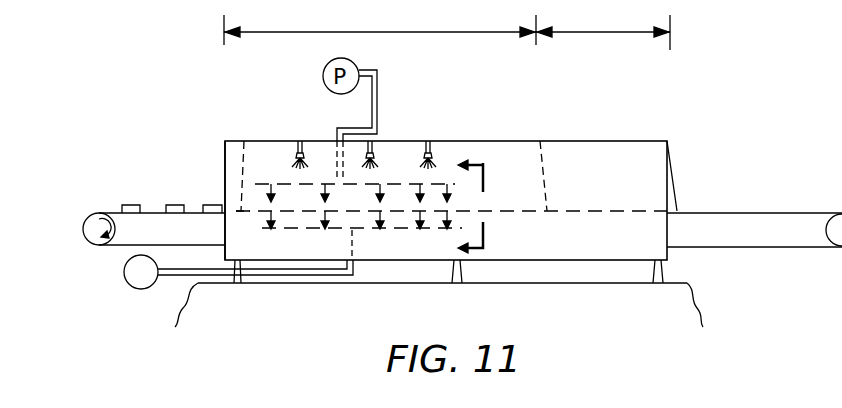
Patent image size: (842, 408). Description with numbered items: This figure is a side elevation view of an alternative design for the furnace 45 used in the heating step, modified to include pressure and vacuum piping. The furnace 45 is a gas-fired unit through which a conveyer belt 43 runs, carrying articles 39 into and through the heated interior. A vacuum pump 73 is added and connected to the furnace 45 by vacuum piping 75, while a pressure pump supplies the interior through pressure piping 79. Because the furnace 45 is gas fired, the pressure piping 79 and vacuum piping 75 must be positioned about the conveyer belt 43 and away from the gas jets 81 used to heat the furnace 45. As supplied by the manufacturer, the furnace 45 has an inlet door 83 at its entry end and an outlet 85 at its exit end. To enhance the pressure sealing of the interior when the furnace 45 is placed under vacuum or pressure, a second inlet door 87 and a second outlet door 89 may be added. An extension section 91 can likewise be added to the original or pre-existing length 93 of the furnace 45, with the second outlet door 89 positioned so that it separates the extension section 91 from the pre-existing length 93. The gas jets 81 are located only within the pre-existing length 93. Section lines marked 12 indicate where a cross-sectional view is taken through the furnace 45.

The section line 12- 12 is at (492, 207).
The articles on conveyor 39 is at (138, 205).
The conveyer belt 43 is at (107, 214).
The furnace 45 is at (628, 141).
The vacuum pump 73 is at (138, 289).
The vacuum piping 75 is at (352, 245).
The pressure piping 79 is at (408, 184).
The gas jets 81 is at (293, 143).
The inlet door 83 is at (224, 182).
The outlet 85 is at (674, 193).
The second inlet door 87 is at (242, 141).
The second outlet door 89 is at (542, 141).
The extension section 91 is at (626, 32).
The pre-existing length 93 is at (420, 32).